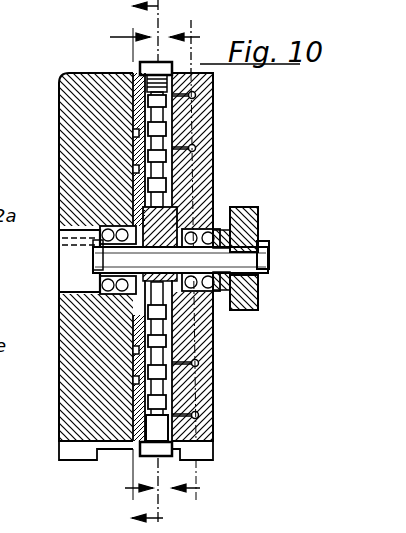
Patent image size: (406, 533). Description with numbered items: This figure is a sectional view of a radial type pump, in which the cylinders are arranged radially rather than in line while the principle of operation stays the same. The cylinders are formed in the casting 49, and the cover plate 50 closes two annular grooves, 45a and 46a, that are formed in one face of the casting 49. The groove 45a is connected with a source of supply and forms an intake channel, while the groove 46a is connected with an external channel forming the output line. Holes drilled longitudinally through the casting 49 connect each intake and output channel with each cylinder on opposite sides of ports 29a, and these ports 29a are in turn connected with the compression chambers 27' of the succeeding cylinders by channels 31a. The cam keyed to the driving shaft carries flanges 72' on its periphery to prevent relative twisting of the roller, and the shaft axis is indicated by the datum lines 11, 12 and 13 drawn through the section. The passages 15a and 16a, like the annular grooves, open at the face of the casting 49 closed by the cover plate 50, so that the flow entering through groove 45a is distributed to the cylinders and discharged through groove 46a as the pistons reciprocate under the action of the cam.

The axis line 11 is at (162, 264).
The datum line 12 is at (201, 261).
The datum line 13 is at (126, 265).
The cover plate 50 is at (62, 93).
The annular groove 45a is at (133, 133).
The annular groove 46a is at (133, 168).
The passage 15a is at (133, 351).
The passage 16a is at (133, 381).
The compression chamber 27' is at (98, 259).
The casting 49 is at (214, 118).
The channel 31a is at (214, 140).
The port 29a is at (197, 149).
The flange 72' is at (220, 258).